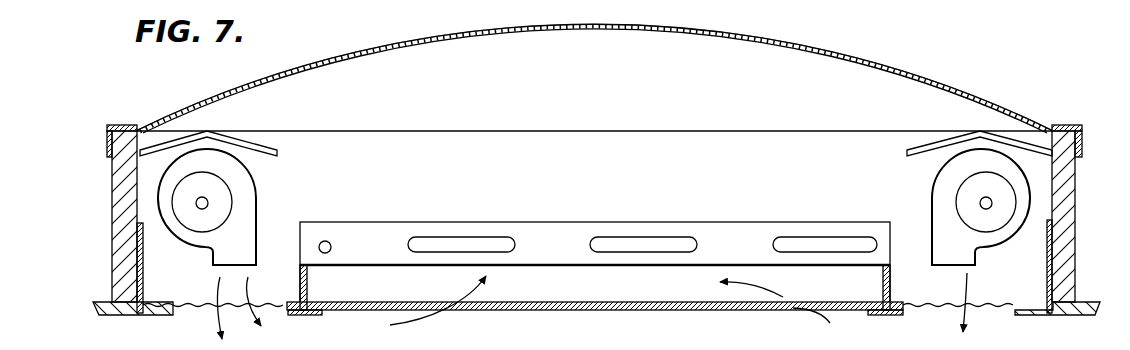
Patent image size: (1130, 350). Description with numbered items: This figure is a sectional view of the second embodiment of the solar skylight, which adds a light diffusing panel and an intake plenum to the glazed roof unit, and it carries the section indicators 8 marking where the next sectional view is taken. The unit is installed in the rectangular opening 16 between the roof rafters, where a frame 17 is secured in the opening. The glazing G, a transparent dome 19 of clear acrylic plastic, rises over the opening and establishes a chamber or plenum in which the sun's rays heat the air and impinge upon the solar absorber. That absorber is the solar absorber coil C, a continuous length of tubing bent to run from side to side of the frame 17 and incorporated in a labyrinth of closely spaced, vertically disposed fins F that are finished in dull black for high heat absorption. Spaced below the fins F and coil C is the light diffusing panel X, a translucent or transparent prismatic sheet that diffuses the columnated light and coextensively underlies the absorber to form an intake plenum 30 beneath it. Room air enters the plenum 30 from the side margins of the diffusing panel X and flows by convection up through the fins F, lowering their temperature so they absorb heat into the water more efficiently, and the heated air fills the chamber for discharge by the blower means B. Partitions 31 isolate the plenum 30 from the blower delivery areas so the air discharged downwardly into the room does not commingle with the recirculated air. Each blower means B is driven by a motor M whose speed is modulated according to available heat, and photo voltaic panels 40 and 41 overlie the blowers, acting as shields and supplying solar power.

The transparent panel or dome 19 is at (900, 54).
The glazing G is at (994, 75).
The opening 16 is at (142, 187).
The frame 17 is at (152, 316).
The section line 8- 8 is at (73, 274).
The photo voltaic panel 40 is at (258, 143).
The photo voltaic panel 41 is at (932, 142).
The blower means B is at (259, 200).
The motor M is at (230, 187).
The fins F is at (558, 231).
The solar absorber coil C is at (663, 234).
The partition 31 is at (308, 283).
The intake plenum 30 is at (642, 283).
The light diffusing panel X is at (557, 311).